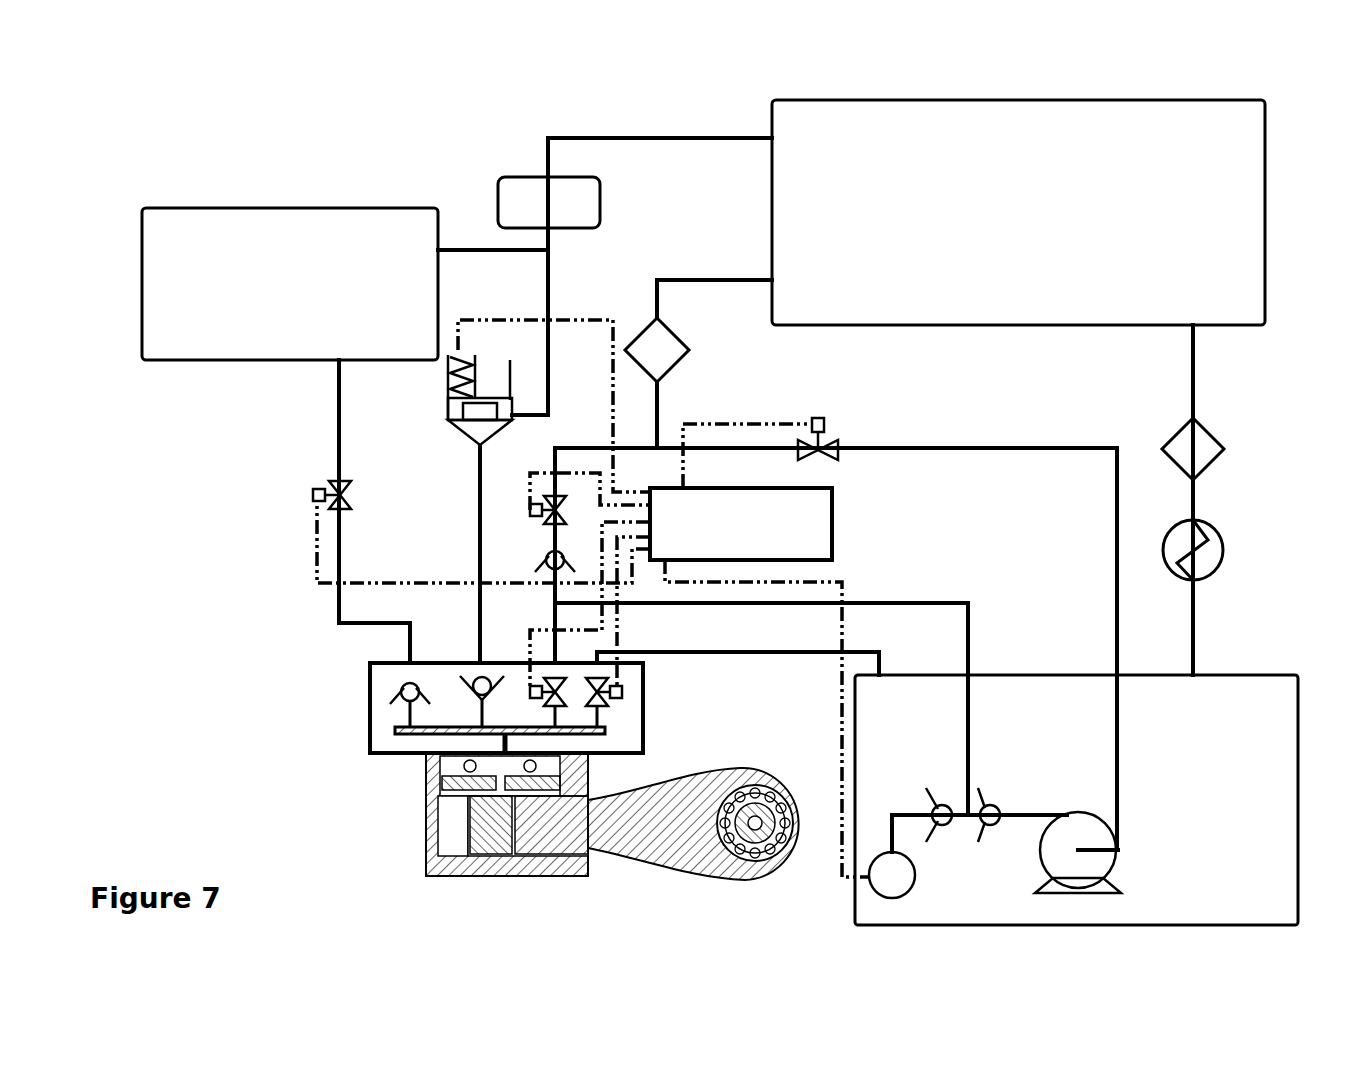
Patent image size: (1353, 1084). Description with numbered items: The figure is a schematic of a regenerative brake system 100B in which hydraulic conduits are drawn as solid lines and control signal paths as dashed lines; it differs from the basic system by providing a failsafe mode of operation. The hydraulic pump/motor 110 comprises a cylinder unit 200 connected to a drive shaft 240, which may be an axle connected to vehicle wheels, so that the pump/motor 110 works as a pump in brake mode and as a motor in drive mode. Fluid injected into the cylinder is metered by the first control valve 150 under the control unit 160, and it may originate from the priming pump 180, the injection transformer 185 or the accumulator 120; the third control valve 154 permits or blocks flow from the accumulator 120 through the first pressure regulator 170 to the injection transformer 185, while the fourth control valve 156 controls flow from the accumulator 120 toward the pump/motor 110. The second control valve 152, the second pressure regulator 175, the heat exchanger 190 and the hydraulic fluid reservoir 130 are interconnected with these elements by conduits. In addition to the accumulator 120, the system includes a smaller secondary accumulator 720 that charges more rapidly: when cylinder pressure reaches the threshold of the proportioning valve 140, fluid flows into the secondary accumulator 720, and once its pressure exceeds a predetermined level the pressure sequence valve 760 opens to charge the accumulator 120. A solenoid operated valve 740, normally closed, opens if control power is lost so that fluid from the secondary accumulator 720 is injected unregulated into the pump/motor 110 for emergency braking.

The regenerative brake system 100B is at (615, 70).
The pressure accumulator 120 is at (1018, 212).
The secondary accumulator 720 is at (290, 284).
The pressure sequence valve 760 is at (549, 202).
The first pressure regulator 170 is at (690, 362).
The third control valve 154 is at (836, 424).
The second pressure regulator 175 is at (1212, 428).
The heat exchanger 190 is at (1225, 555).
The control unit 160 is at (741, 524).
The solenoid operated valve 740 is at (312, 492).
The proportioning valve 140 is at (448, 415).
The fourth control valve 156 is at (528, 510).
The hydraulic fluid reservoir 130 is at (1076, 800).
The second control valve 152 is at (624, 698).
The first control valve 150 is at (575, 715).
The cylinder unit 200 is at (428, 812).
The hydraulic pump/motor 110 is at (428, 875).
The drive shaft 240 is at (765, 825).
The priming pump 180 is at (912, 885).
The injection transformer 185 is at (1108, 870).